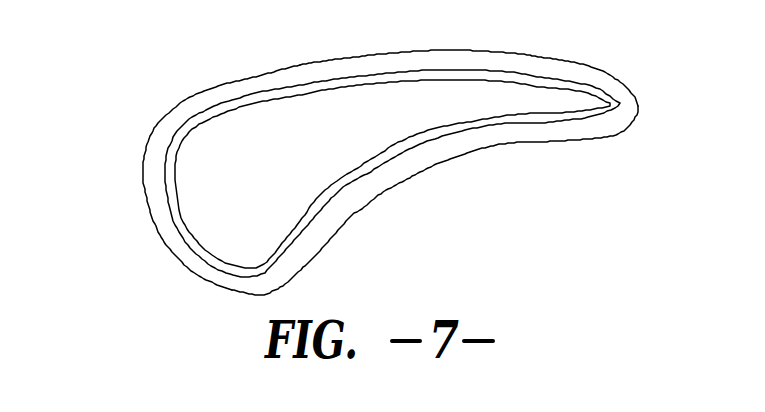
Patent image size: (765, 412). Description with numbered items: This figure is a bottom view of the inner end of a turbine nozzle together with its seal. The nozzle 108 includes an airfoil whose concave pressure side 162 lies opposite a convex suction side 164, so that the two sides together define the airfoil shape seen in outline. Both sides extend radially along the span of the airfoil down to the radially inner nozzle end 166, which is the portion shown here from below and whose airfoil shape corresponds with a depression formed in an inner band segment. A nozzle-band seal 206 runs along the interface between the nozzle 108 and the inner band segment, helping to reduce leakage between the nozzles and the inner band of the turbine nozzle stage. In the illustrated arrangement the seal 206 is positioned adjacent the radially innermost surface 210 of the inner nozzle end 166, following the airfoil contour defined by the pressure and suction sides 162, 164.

The nozzle 108 is at (344, 152).
The concave pressure side 162 is at (401, 181).
The convex suction side 164 is at (272, 72).
The radially inner nozzle end 166 is at (499, 58).
The nozzle-band seal 206 is at (477, 121).
The radially innermost surface of inner nozzle end 210 is at (183, 238).